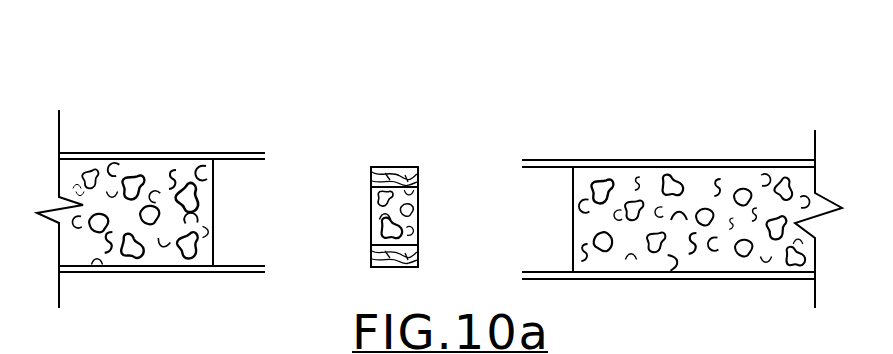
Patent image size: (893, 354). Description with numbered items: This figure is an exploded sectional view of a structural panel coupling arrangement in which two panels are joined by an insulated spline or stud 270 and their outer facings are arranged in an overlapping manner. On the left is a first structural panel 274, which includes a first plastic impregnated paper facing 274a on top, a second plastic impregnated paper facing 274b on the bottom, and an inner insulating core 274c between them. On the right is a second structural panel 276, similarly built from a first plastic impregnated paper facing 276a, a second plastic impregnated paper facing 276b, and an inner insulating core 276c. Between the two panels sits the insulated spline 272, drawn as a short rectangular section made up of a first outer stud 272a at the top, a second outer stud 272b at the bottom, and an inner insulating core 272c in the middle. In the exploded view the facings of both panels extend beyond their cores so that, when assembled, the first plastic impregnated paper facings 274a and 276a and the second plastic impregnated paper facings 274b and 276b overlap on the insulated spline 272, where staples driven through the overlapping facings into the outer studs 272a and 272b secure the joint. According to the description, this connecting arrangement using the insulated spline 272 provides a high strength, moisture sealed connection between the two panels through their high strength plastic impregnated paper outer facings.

The insulated spline or stud 270 is at (327, 151).
The insulated spline 272 is at (410, 165).
The first outer stud 272a is at (378, 172).
The second outer stud 272b is at (400, 258).
The inner insulating core 272c is at (408, 223).
The first structural panel 274 is at (165, 153).
The first plastic impregnated paper facing 274a is at (120, 152).
The second plastic impregnated paper facing 274b is at (177, 268).
The inner insulating core 274c is at (75, 250).
The second structural panel 276 is at (628, 158).
The first plastic impregnated paper facing 276a is at (732, 160).
The second plastic impregnated paper facing 276b is at (608, 278).
The inner insulating core 276c is at (725, 258).